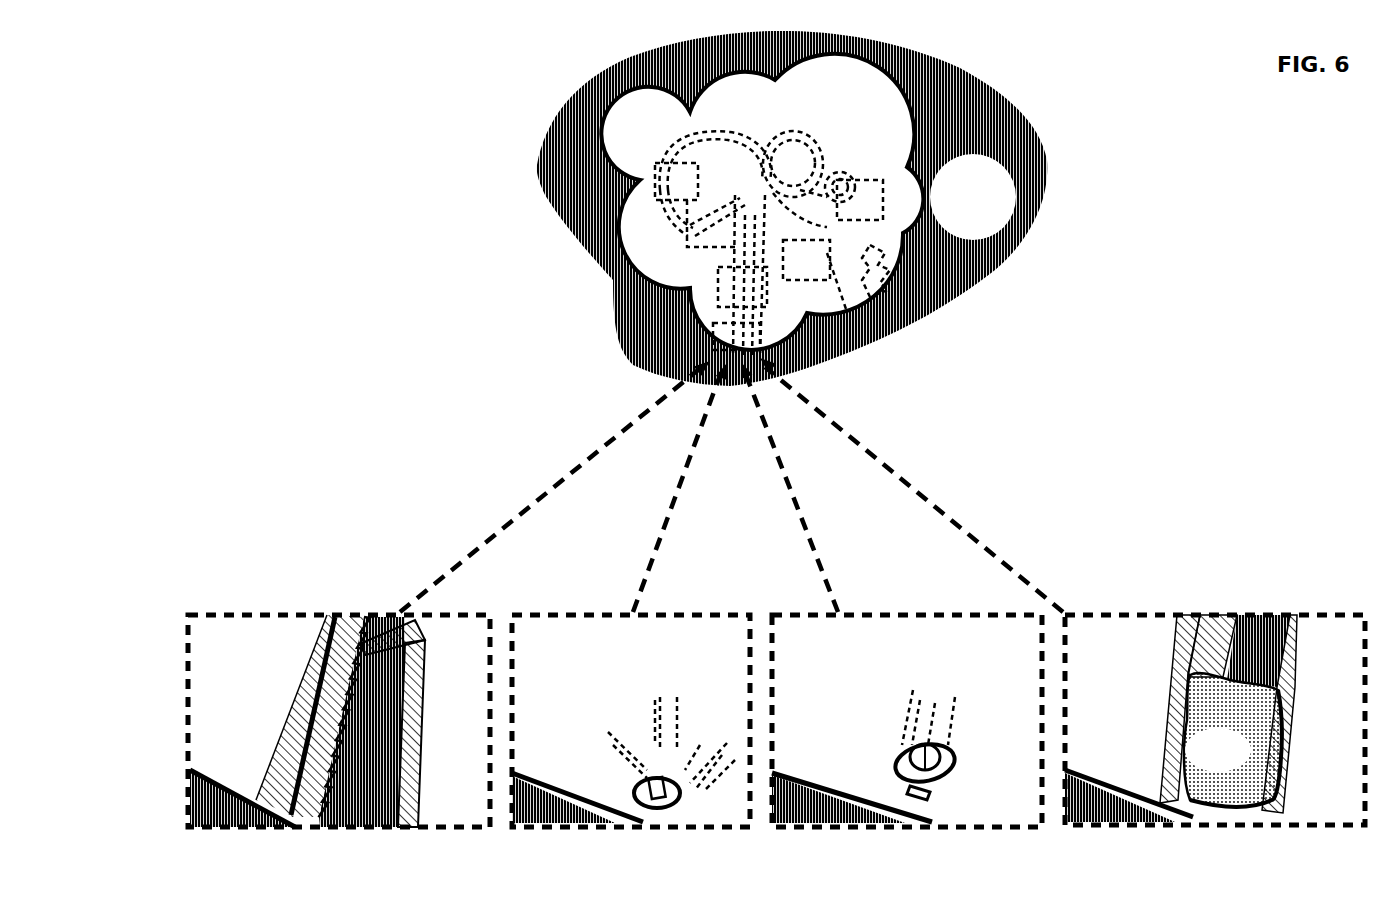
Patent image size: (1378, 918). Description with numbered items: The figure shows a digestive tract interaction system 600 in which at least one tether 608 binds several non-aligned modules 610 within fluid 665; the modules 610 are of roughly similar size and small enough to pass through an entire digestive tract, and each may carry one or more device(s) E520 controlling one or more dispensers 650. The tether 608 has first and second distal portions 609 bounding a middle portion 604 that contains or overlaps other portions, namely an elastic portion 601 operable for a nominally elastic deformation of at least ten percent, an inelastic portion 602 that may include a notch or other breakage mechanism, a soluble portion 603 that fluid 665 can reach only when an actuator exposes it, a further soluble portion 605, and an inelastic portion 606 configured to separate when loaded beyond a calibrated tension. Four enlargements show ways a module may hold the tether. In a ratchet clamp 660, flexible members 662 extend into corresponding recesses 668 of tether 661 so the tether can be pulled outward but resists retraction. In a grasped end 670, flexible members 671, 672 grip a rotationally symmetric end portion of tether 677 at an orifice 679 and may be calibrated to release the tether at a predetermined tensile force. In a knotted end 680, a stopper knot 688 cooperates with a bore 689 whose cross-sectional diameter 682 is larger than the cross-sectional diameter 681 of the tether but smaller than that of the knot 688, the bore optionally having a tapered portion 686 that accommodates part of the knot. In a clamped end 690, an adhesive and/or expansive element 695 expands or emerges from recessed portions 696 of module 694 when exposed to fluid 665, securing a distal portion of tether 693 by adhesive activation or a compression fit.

The system 600 is at (300, 180).
The elastic portion 601 is at (657, 190).
The inelastic portion 602 is at (690, 244).
The soluble portion 603 is at (695, 305).
The middle portion 604 is at (848, 151).
The soluble portion 605 is at (880, 177).
The inelastic portion 606 is at (847, 327).
The tether 608 is at (655, 118).
The distal portion 609 is at (718, 353).
The modules 610 is at (762, 202).
The dispenser 650 is at (882, 258).
The fluid 665 is at (372, 792).
The device(s) E520 is at (865, 278).
The ratchet clamp 660 is at (339, 721).
The tether 661 is at (292, 767).
The flexible member 662 is at (414, 628).
The recess 668 is at (360, 678).
The grasped end 670 is at (631, 721).
The flexible member 671 is at (633, 743).
The flexible member 672 is at (700, 743).
The tether 677 is at (637, 785).
The orifice 679 is at (635, 802).
The knotted end 680 is at (907, 721).
The cross-sectional diameter of the tether 681 is at (962, 813).
The cross-sectional diameter of the bore 682 is at (915, 692).
The tapered portion 686 is at (960, 748).
The knot 688 is at (905, 748).
The bore 689 is at (902, 773).
The clamped end 690 is at (1215, 720).
The tether 693 is at (1163, 803).
The module 694 is at (1269, 646).
The adhesive and/or expansive element 695 is at (1233, 740).
The recessed portion 696 is at (1298, 714).